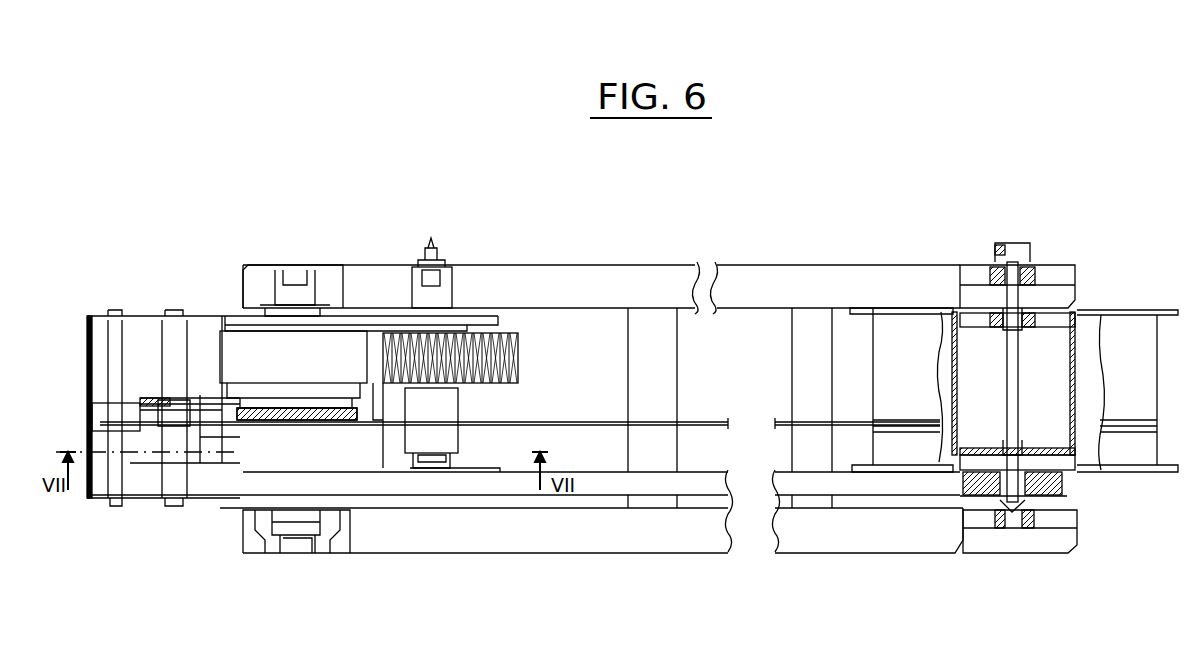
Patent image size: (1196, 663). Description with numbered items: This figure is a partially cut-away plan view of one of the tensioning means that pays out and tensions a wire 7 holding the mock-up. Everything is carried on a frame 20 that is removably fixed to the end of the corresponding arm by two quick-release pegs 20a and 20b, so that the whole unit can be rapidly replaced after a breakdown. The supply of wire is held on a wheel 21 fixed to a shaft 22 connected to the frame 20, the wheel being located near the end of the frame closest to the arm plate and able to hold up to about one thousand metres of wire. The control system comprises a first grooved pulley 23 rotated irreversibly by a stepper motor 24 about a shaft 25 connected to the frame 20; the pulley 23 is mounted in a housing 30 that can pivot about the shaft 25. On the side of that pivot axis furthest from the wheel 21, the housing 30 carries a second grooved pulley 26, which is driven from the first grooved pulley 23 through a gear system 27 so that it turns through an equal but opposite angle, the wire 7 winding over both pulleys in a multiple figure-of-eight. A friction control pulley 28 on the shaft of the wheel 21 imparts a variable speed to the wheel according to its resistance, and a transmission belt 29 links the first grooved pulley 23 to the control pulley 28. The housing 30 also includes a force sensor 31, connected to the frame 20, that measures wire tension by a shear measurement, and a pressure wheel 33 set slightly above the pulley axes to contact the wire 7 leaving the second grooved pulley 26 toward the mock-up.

The wire 7 is at (590, 398).
The frame 20 is at (605, 292).
The quick-release peg 20a is at (665, 380).
The quick-release peg 20b is at (814, 380).
The wheel 21 is at (1082, 385).
The shaft 22 is at (1015, 383).
The first grooved pulley 23 is at (355, 365).
The stepper motor 24 is at (518, 355).
The shaft 25 is at (297, 312).
The second grooved pulley 26 is at (207, 407).
The gear system 27 is at (237, 462).
The control pulley 28 is at (1067, 487).
The transmission belt 29 is at (698, 482).
The housing 30 is at (140, 318).
The force sensor 31 is at (437, 302).
The pressure wheel 33 is at (115, 343).